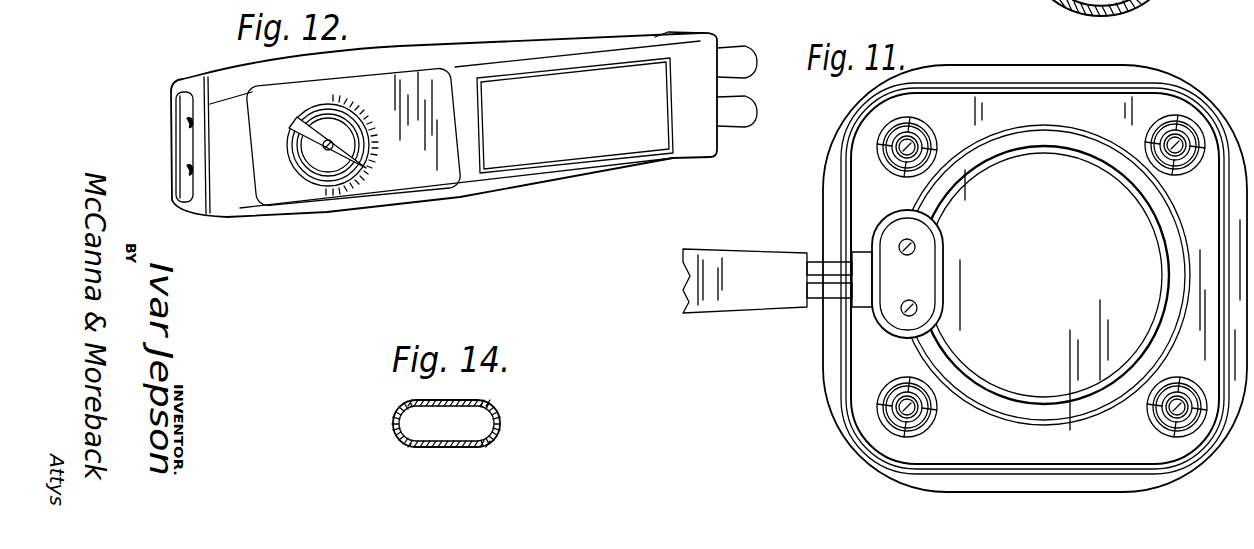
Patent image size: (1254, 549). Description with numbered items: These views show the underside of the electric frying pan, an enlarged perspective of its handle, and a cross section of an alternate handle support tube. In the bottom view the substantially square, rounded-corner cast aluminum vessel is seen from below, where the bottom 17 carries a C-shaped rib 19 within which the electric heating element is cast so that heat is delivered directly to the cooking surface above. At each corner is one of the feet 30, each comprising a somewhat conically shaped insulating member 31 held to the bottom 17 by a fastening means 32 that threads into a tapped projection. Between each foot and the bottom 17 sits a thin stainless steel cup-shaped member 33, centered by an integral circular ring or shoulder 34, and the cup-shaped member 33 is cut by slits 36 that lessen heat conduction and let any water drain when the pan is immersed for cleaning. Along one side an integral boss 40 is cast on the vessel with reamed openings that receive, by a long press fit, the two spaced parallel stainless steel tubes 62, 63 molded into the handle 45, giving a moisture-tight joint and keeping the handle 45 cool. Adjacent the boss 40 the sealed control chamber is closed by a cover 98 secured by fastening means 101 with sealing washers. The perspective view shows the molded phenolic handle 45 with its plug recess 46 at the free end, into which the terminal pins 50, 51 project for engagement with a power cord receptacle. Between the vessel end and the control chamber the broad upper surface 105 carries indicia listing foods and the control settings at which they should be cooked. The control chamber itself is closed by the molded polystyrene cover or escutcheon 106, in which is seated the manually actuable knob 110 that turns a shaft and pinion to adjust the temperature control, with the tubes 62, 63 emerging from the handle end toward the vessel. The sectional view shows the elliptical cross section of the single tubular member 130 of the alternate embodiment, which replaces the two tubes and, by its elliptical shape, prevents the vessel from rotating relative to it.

In FIG. 11, the bottom 17 is at (1050, 232).
In FIG. 11, the C-shaped rib 19 is at (1018, 150).
In FIG. 11, the feet 30 is at (1187, 130).
In FIG. 11, the insulating member 31 is at (916, 140).
In FIG. 11, the fastening means 32 is at (908, 152).
In FIG. 11, the cup-shaped member 33 is at (906, 380).
In FIG. 11, the circular ring or shoulder 34 is at (930, 150).
In FIG. 11, the slits 36 is at (895, 165).
In FIG. 11, the integral boss 40 is at (862, 310).
In FIG. 12, the handle 45 is at (532, 46).
In FIG. 11, the handle 45 is at (725, 305).
In FIG. 12, the plug recess 46 is at (179, 100).
In FIG. 12, the terminal pin 50 is at (199, 183).
In FIG. 12, the terminal pin 51 is at (190, 124).
In FIG. 12, the tubular support 62 is at (742, 125).
In FIG. 11, the tubular support 62 is at (815, 262).
In FIG. 12, the tubular support 63 is at (733, 52).
In FIG. 11, the tubular support 63 is at (812, 298).
In FIG. 11, the cover 98 is at (925, 277).
In FIG. 11, the fastening means 101 is at (917, 247).
In FIG. 12, the indicia surface 105 is at (565, 132).
In FIG. 12, the cover or escutcheon 106 is at (377, 187).
In FIG. 12, the manually actuable knob 110 is at (303, 167).
In FIG. 14, the tubular member 130 is at (495, 408).